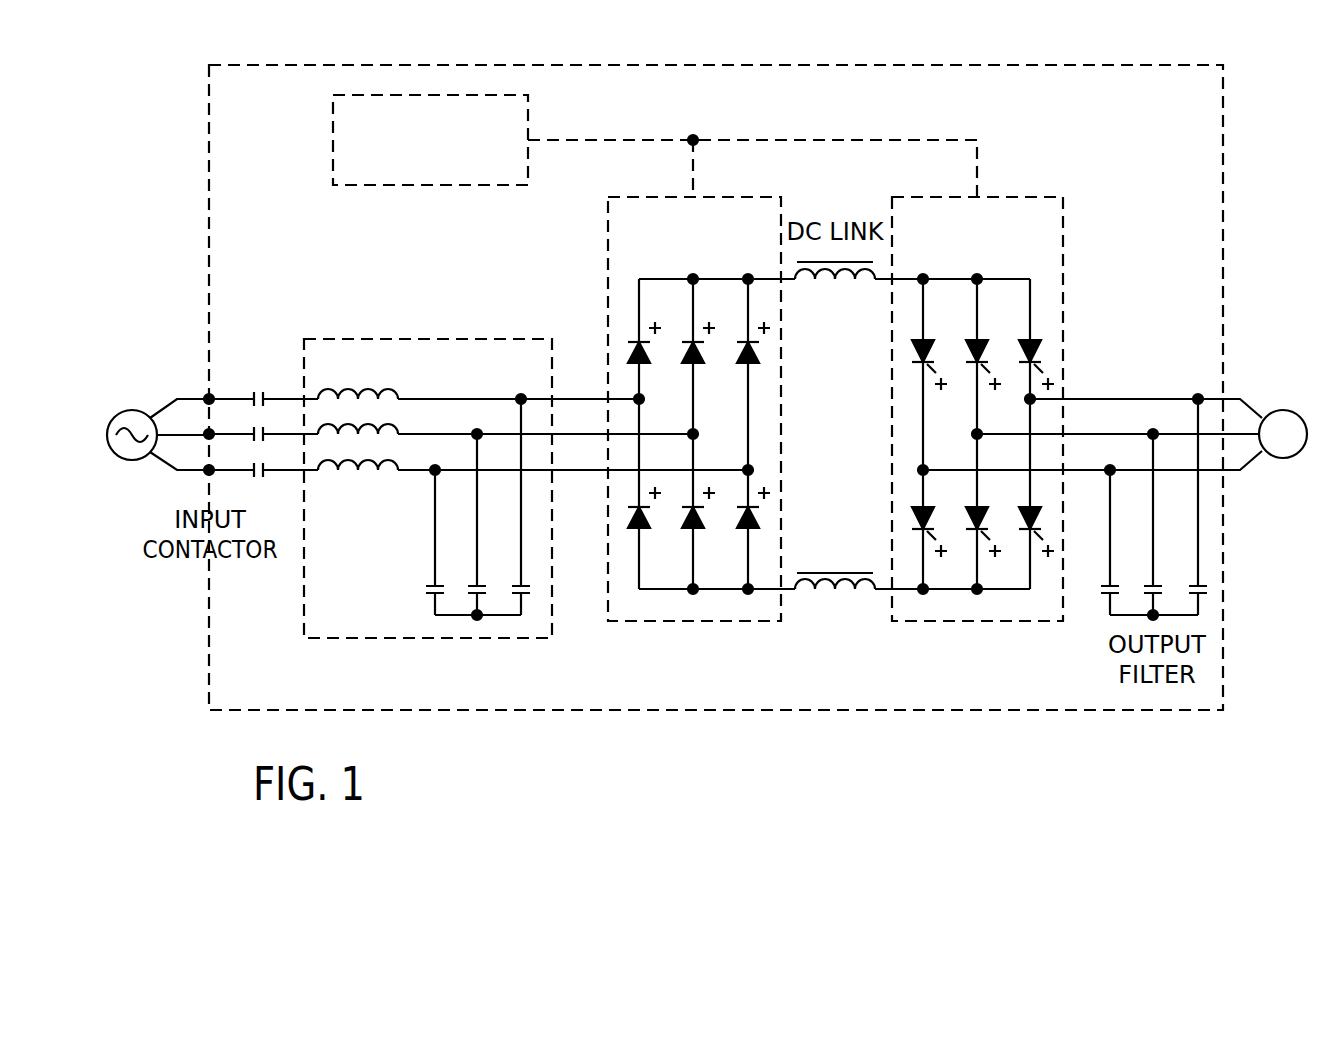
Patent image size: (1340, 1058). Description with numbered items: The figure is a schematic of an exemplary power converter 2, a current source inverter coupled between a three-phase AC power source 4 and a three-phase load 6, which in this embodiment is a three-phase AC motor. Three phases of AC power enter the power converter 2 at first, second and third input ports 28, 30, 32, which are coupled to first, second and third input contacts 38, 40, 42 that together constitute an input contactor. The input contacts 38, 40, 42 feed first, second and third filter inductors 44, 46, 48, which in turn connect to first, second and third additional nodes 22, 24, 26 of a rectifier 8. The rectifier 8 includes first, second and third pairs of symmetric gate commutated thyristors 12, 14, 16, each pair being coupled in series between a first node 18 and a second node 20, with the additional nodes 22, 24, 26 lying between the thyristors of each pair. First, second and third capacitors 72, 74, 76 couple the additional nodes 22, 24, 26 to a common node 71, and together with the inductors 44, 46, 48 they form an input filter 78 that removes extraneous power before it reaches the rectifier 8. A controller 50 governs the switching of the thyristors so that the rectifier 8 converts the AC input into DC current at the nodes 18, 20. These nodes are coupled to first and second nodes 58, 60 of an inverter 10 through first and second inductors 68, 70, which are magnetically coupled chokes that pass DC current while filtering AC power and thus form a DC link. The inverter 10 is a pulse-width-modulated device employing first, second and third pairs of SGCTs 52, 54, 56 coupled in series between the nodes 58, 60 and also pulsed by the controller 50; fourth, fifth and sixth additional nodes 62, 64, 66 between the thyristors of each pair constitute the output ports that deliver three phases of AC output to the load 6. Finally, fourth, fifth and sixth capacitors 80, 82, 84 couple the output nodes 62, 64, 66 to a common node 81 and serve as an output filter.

The power converter 2 is at (981, 717).
The three-phase AC power source 4 is at (114, 417).
The three-phase load 6 is at (1300, 411).
The rectifier 8 is at (730, 181).
The inverter 10 is at (948, 185).
The first pair of symmetric gate commutated thyristors 12 is at (625, 339).
The second pair of symmetric gate commutated thyristors 14 is at (686, 336).
The third pair of symmetric gate commutated thyristors 16 is at (736, 334).
The first node 18 is at (691, 271).
The second node 20 is at (701, 603).
The first additional node 22 is at (645, 399).
The second additional node 24 is at (696, 433).
The third additional node 26 is at (751, 470).
The first input port 28 is at (206, 394).
The second input port 30 is at (206, 441).
The third input port 32 is at (206, 465).
The first input contact 38 is at (245, 392).
The second input contact 40 is at (271, 428).
The third input contact 42 is at (272, 479).
The first filter inductor 44 is at (387, 392).
The second filter inductor 46 is at (388, 431).
The third filter inductor 48 is at (372, 456).
The controller 50 is at (333, 142).
The first pair of SGCTs 52 is at (935, 334).
The second pair of SGCTs 54 is at (989, 334).
The third pair of SGCTs 56 is at (1050, 334).
The first node 58 is at (982, 270).
The second node 60 is at (972, 604).
The fourth additional node 62 is at (1087, 468).
The fifth additional node 64 is at (1130, 432).
The sixth additional node 66 is at (1173, 398).
The first inductor 68 is at (826, 293).
The second inductor 70 is at (839, 536).
The common node 71 is at (476, 616).
The first capacitor 72 is at (517, 583).
The second capacitor 74 is at (474, 582).
The third capacitor 76 is at (435, 584).
The input filter 78 is at (330, 333).
The fourth capacitor 80 is at (1115, 582).
The common node 81 is at (1156, 617).
The fifth capacitor 82 is at (1157, 582).
The sixth capacitor 84 is at (1201, 585).